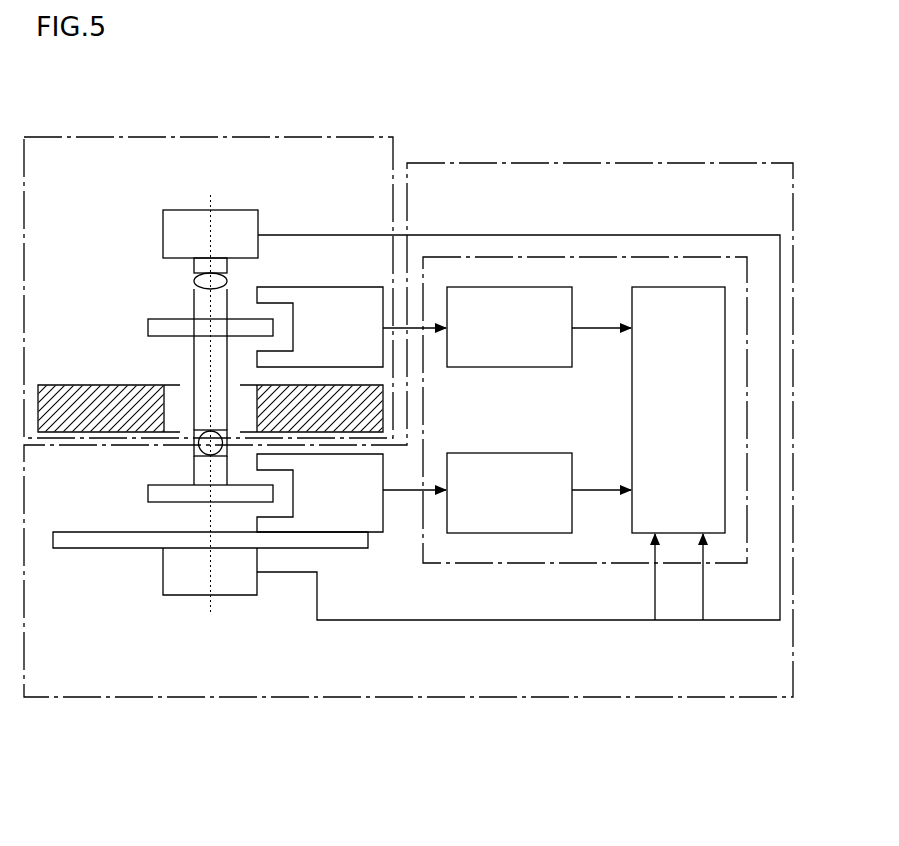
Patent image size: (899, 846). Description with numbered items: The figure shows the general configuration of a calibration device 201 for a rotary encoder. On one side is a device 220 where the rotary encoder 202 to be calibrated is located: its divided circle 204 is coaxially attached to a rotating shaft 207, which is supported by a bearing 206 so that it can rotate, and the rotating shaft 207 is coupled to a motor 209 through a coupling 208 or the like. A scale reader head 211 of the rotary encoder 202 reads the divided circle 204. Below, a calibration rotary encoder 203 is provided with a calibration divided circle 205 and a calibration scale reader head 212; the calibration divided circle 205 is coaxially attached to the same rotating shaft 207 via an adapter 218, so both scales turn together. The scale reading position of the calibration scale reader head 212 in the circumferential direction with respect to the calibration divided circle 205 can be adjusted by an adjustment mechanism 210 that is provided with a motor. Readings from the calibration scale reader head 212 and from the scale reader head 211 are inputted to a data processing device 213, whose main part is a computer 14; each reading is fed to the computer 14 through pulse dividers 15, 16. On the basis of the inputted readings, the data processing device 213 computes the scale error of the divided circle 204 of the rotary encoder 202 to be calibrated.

The computer 14 is at (699, 287).
The pulse divider 15 is at (541, 287).
The pulse divider 16 is at (546, 453).
The calibration device 201 is at (457, 702).
The rotary encoder to be calibrated 202 is at (375, 191).
The calibration rotary encoder 203 is at (237, 650).
The divided circle 204 is at (247, 311).
The calibration divided circle 205 is at (264, 506).
The bearing 206 is at (97, 379).
The rotating shaft 207 is at (184, 367).
The coupling 208 is at (186, 282).
The motor 209 is at (237, 209).
The adjustment mechanism 210 is at (159, 573).
The scale reader head 211 is at (328, 286).
The calibration scale reader head 212 is at (313, 519).
The data processing device 213 is at (471, 256).
The adapter 218 is at (184, 451).
The device on the side of the rotary encoder to be calibrated 220 is at (314, 134).